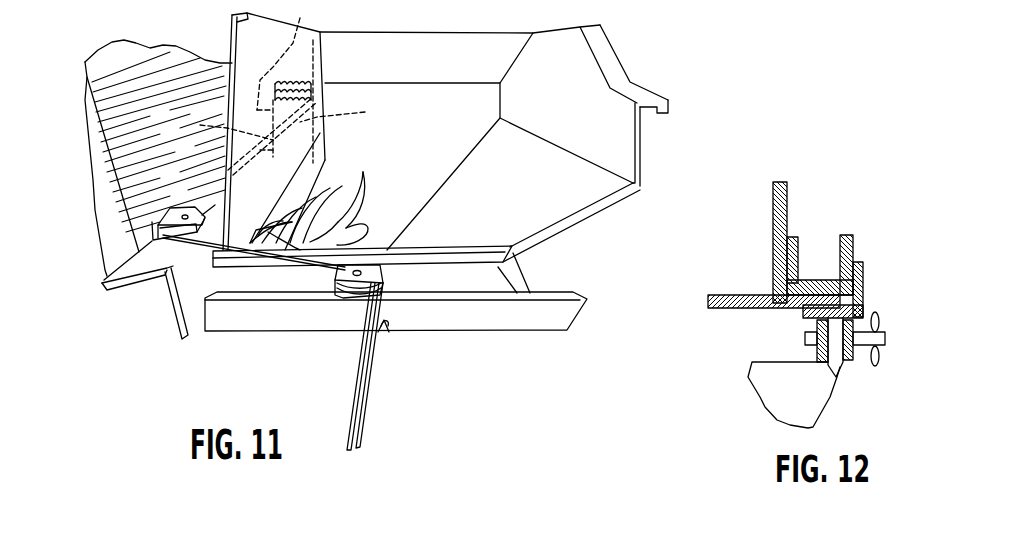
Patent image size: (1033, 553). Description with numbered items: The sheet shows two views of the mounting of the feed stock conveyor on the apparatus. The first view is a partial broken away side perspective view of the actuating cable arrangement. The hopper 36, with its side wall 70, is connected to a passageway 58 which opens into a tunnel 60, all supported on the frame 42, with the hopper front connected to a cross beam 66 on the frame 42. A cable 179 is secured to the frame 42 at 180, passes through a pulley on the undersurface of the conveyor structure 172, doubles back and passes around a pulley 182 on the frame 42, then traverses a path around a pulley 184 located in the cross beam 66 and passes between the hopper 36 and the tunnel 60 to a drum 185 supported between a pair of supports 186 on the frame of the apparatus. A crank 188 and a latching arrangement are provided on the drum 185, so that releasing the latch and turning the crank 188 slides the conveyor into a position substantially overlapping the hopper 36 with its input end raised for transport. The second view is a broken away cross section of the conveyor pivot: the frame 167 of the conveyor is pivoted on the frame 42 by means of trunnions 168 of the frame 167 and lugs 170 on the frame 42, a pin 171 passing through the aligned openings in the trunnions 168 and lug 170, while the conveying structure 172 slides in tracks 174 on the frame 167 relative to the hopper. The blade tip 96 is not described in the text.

In FIG. 11, the tunnel 60 is at (176, 44).
In FIG. 11, the crank 188 is at (276, 87).
In FIG. 11, the drum 185 is at (323, 26).
In FIG. 11, the side wall 70 is at (467, 100).
In FIG. 11, the hopper 36 is at (627, 58).
In FIG. 11, the supports 186 is at (281, 119).
In FIG. 11, the passageway 58 is at (332, 173).
In FIG. 11, the blade 96 is at (365, 177).
In FIG. 11, the pulley 184 is at (165, 208).
In FIG. 11, the cross beam 66 is at (175, 307).
In FIG. 11, the pulley 182 is at (345, 305).
In FIG. 11, the cable securing point 180 is at (390, 324).
In FIG. 11, the cable 179 is at (366, 392).
In FIG. 11, the frame 42 is at (492, 322).
In FIG. 12, the frame 42 is at (778, 397).
In FIG. 12, the structure 172 is at (818, 280).
In FIG. 12, the tracks 174 is at (833, 281).
In FIG. 12, the frame 167 is at (858, 293).
In FIG. 12, the trunnions 168 is at (806, 325).
In FIG. 12, the pin 171 is at (863, 350).
In FIG. 12, the lugs 170 is at (837, 390).